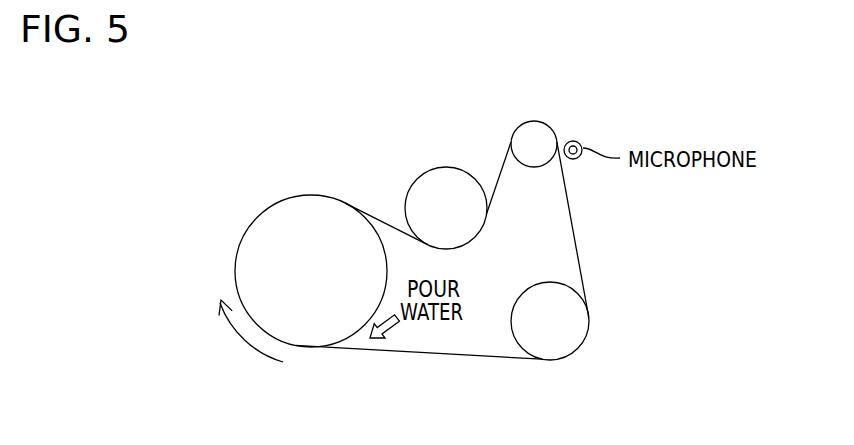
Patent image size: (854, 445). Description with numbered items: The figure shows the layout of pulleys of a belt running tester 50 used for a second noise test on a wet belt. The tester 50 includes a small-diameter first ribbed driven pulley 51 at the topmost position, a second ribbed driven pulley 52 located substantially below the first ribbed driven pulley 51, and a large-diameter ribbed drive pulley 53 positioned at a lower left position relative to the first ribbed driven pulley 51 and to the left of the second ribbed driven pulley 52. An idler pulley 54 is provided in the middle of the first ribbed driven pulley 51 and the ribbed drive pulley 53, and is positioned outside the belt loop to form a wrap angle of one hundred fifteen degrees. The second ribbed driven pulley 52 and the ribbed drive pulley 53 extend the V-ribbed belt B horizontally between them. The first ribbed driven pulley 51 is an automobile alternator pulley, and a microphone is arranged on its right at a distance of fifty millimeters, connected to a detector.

The belt running tester 50 is at (428, 217).
The first ribbed driven pulley 51 is at (534, 130).
The second ribbed driven pulley 52 is at (570, 335).
The ribbed drive pulley 53 is at (263, 227).
The idler pulley 54 is at (443, 180).
The V-ribbed belt B is at (465, 360).